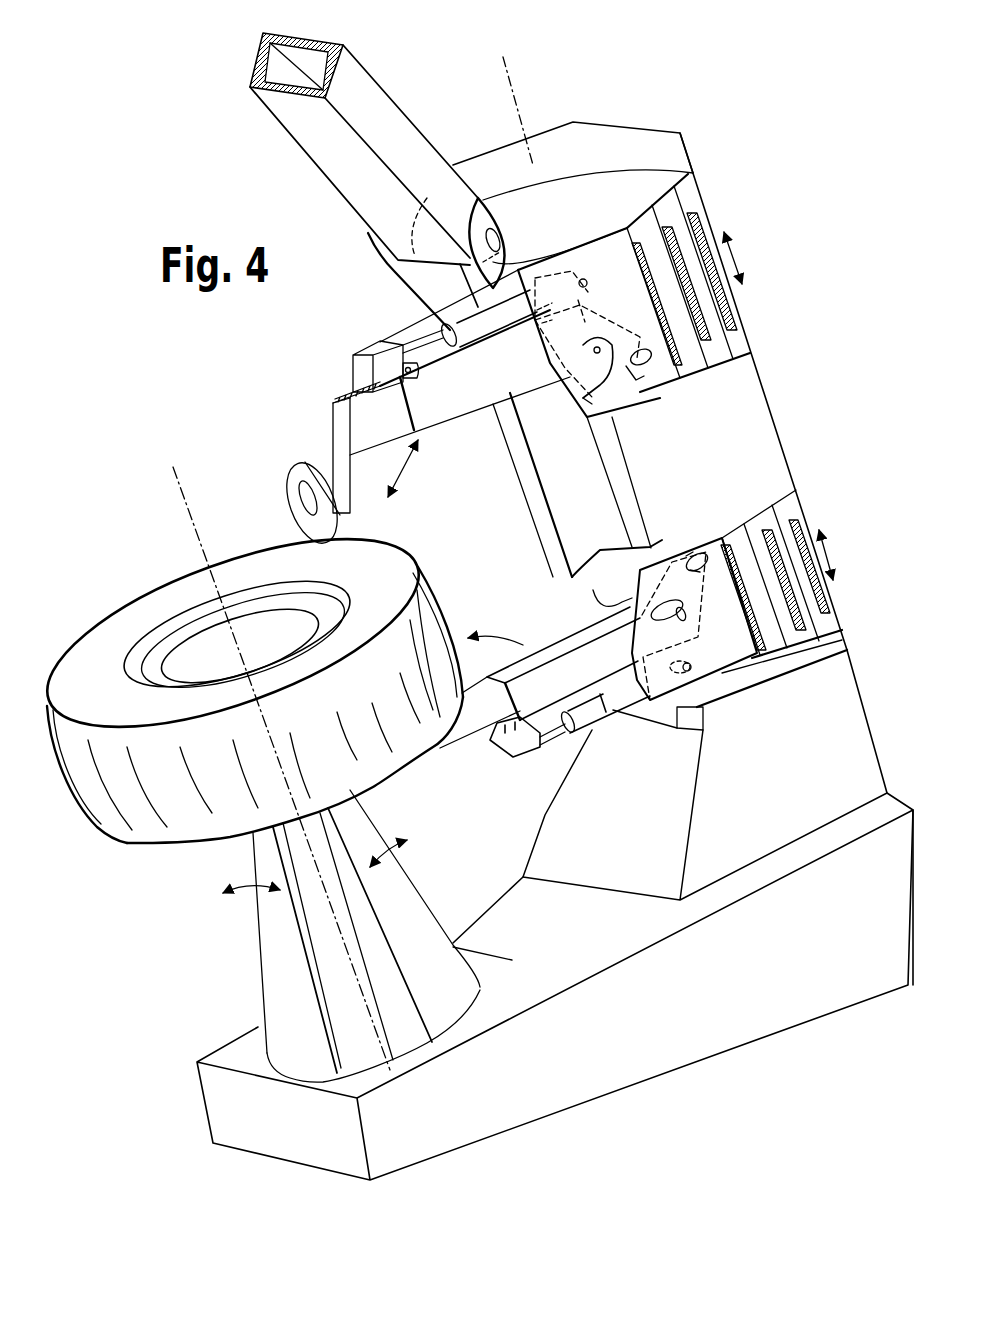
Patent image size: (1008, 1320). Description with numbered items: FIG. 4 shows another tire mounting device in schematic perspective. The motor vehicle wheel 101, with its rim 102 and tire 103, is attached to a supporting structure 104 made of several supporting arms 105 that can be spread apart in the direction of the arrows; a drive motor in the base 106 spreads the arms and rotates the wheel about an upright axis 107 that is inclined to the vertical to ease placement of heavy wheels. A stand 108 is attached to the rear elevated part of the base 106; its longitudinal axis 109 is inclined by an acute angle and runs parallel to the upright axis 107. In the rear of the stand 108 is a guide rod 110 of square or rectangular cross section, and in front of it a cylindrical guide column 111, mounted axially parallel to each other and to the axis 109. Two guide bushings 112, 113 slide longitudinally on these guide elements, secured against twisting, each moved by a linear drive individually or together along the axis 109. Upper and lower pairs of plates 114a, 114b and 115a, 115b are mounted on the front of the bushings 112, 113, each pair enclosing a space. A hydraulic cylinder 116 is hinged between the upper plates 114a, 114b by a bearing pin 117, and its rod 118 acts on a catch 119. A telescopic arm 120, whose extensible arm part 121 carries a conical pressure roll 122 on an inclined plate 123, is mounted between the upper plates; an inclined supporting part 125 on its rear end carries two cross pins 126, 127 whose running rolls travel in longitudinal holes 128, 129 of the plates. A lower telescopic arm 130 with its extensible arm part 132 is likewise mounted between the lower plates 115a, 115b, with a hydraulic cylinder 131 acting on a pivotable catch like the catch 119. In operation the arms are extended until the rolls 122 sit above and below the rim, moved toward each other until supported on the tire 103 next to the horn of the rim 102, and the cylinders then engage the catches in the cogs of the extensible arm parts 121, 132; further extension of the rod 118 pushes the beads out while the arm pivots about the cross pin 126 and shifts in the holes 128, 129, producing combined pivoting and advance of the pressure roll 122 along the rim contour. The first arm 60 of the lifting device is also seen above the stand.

The first arm 60 is at (387, 110).
The motor vehicle wheel 101 is at (160, 562).
The rim 102 is at (150, 645).
The tire 103 is at (145, 820).
The supporting structure 104 is at (255, 972).
The supporting arms 105 is at (318, 922).
The base 106 is at (745, 1018).
The upright axis 107 is at (185, 477).
The stand 108 is at (682, 153).
The longitudinal axis 109 is at (515, 92).
The guide rod 110 is at (738, 342).
The guide column 111 is at (643, 208).
The guide bushing 112 is at (688, 290).
The guide bushing 113 is at (805, 530).
The upper plate 114a is at (485, 205).
The upper plate 114b is at (720, 315).
The lower plate 115a is at (572, 576).
The lower plate 115b is at (735, 653).
The hydraulic cylinder 116 is at (455, 320).
The bearing pin 117 is at (585, 278).
The rod 118 is at (412, 340).
The catch 119 is at (355, 370).
The telescopic arm 120 is at (458, 392).
The extensible arm part 121 is at (400, 425).
The conical pressure roll 122 is at (298, 497).
The inclined plate 123 is at (335, 420).
The inclined supporting part 125 is at (590, 322).
The cross pin 126 is at (663, 375).
The cross pin 127 is at (600, 413).
The longitudinal hole 128 is at (638, 390).
The longitudinal hole 129 is at (592, 392).
The telescopic arm 130 is at (548, 646).
The hydraulic cylinder 131 is at (613, 705).
The extensible arm part 132 is at (455, 735).